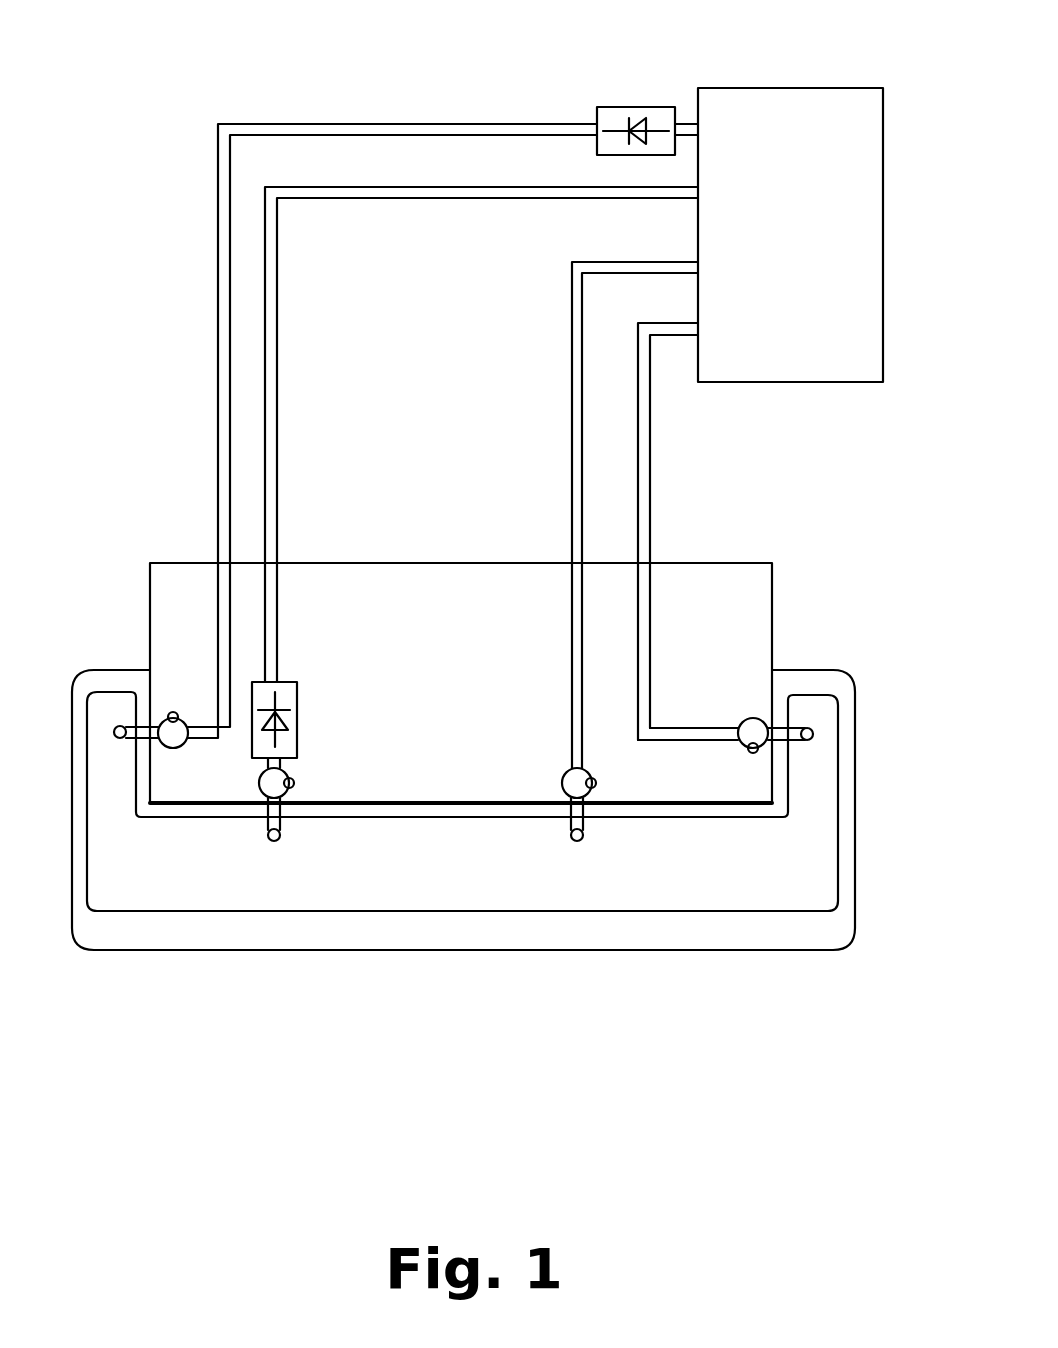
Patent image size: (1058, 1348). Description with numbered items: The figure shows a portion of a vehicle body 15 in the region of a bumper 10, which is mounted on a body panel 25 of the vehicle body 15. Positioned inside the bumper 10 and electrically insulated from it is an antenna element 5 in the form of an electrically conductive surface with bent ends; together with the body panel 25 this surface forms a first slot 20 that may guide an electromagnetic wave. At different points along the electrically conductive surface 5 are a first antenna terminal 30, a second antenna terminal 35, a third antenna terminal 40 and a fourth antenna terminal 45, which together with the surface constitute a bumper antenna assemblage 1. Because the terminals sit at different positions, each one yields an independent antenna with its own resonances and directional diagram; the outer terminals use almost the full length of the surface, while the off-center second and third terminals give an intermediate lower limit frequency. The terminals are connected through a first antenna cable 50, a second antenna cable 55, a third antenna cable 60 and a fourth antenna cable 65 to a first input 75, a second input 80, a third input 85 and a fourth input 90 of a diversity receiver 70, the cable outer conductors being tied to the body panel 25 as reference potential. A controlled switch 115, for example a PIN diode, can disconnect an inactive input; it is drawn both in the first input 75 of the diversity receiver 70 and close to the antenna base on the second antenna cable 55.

The bumper antenna assemblage 1 is at (463, 865).
The antenna element 5 is at (290, 887).
The bumper 10 is at (502, 940).
The vehicle body 15 is at (793, 630).
The first slot 20 is at (642, 810).
The body panel 25 is at (208, 785).
The first antenna terminal 30 is at (122, 727).
The second antenna terminal 35 is at (273, 841).
The third antenna terminal 40 is at (577, 842).
The fourth antenna terminal 45 is at (813, 735).
The first antenna cable 50 is at (224, 484).
The second antenna cable 55 is at (272, 484).
The third antenna cable 60 is at (577, 497).
The fourth antenna cable 65 is at (645, 480).
The diversity receiver 70 is at (830, 112).
The first input 75 is at (700, 128).
The second input 80 is at (690, 193).
The third input 85 is at (690, 268).
The fourth input 90 is at (690, 330).
The controlled switch 115 is at (617, 117).